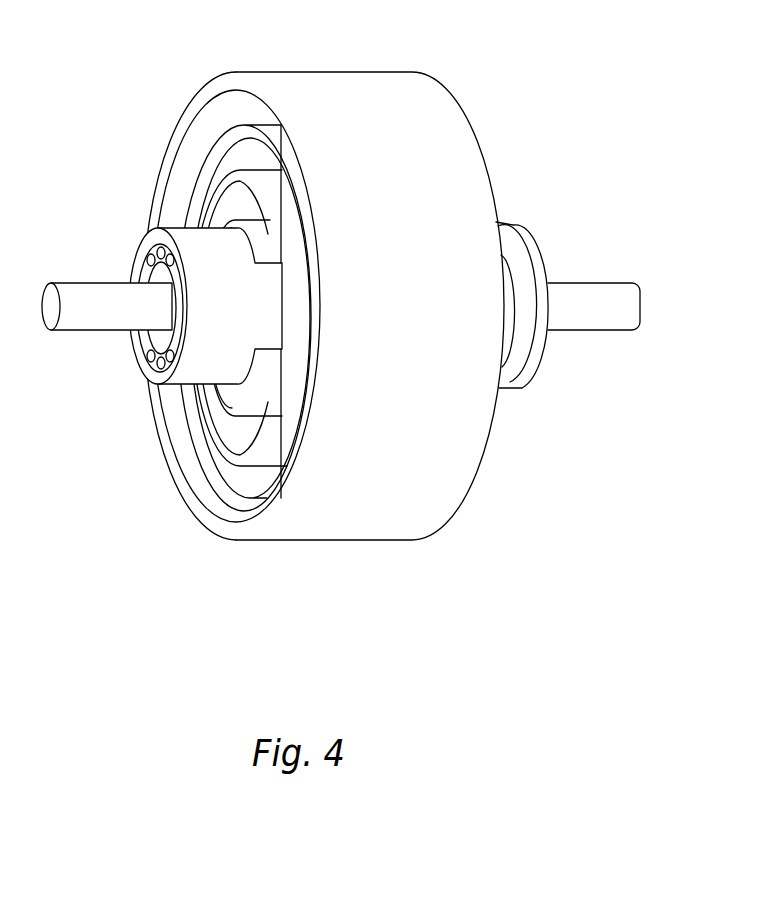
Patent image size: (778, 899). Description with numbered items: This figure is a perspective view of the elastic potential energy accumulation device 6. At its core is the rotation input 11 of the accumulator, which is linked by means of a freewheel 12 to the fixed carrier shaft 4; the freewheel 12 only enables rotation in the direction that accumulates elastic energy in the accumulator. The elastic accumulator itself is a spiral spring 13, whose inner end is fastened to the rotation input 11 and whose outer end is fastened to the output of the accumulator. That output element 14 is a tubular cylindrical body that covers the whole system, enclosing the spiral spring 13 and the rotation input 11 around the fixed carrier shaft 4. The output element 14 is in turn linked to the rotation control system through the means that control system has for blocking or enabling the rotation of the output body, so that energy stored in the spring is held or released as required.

The fixed carrier shaft 4 is at (145, 300).
The elastic potential energy accumulation device 6 is at (341, 332).
The rotation input 11 is at (213, 250).
The freewheel 12 is at (160, 343).
The spiral spring 13 is at (277, 443).
The output element 14 is at (350, 113).